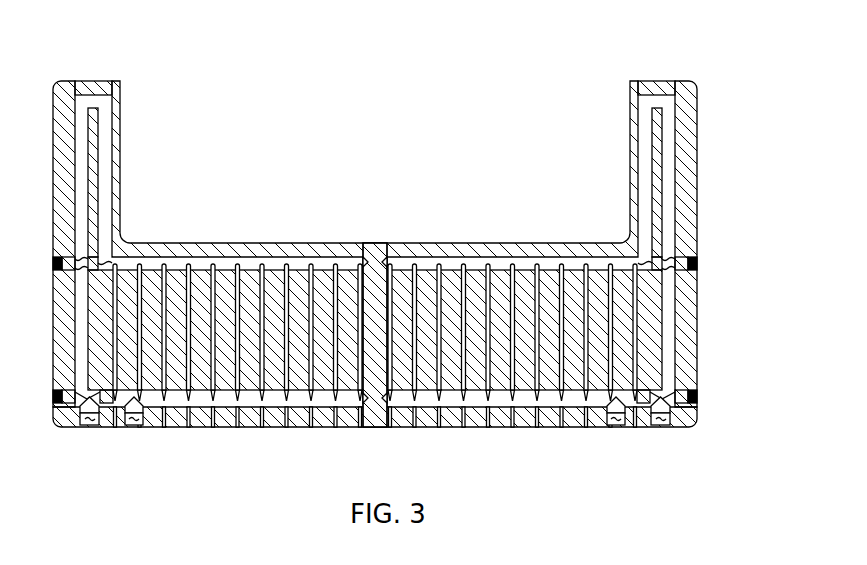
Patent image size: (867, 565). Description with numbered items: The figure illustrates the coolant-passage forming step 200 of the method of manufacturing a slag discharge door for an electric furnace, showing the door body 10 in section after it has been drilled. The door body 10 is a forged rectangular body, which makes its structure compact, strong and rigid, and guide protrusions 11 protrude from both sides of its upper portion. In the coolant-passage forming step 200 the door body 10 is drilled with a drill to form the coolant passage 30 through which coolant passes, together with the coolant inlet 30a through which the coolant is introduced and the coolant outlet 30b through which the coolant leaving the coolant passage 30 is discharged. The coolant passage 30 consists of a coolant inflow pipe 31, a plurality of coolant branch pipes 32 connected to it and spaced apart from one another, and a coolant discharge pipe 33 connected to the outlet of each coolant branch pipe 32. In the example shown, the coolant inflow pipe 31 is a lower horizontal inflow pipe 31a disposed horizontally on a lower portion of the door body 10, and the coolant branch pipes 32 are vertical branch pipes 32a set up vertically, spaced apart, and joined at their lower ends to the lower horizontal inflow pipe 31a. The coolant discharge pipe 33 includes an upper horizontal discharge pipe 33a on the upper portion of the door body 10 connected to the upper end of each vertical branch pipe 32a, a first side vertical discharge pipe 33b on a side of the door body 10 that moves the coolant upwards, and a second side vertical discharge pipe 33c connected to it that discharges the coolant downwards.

The coolant-passage forming step 200 is at (396, 233).
The door body 10 is at (396, 254).
The guide protrusion 11 is at (68, 89).
The coolant passage 30 is at (372, 292).
The coolant inlet 30a is at (136, 426).
The coolant outlet 30b is at (89, 426).
The coolant inflow pipe 31 is at (375, 290).
The lower horizontal inflow pipe 31a is at (250, 395).
The coolant branch pipe 32 is at (375, 277).
The vertical branch pipe 32a is at (343, 303).
The coolant discharge pipe 33 is at (345, 244).
The upper horizontal discharge pipe 33a is at (153, 267).
The first side vertical discharge pipe 33b is at (103, 159).
The second side vertical discharge pipe 33c is at (78, 133).